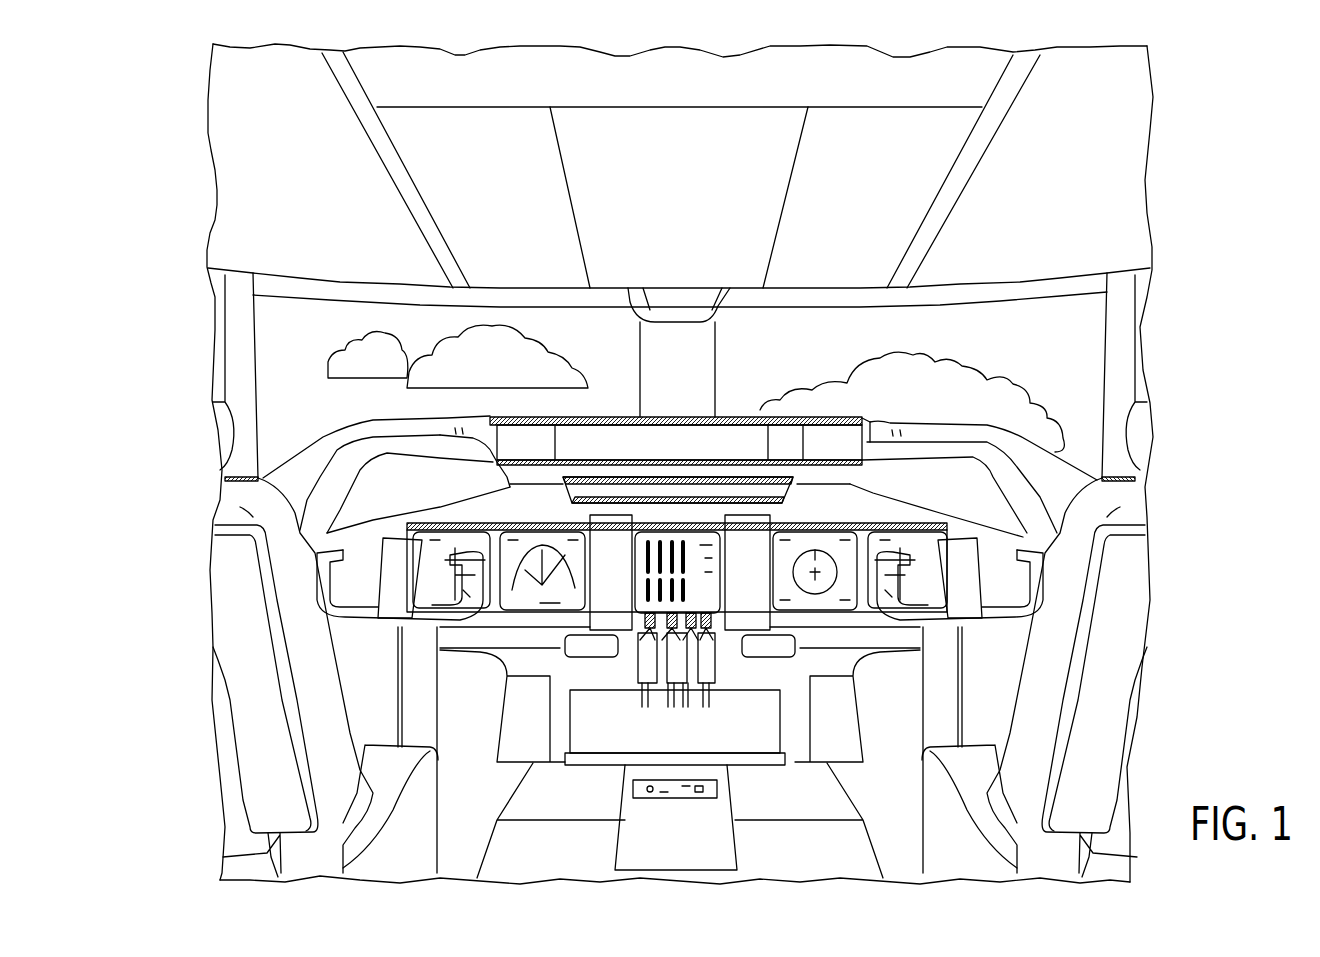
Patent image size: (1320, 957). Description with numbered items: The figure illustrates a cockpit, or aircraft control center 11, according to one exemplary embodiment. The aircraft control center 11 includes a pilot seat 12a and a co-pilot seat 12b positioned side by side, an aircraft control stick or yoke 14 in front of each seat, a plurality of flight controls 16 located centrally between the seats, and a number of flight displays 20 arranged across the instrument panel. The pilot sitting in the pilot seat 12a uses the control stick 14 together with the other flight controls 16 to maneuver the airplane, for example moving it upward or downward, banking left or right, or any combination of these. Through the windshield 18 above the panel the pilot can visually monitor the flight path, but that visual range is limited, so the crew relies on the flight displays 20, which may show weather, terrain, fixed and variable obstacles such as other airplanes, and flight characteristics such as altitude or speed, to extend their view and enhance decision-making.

The aircraft control center 11 is at (1200, 170).
The pilot seat 12a is at (220, 573).
The co-pilot seat 12b is at (1133, 595).
The aircraft control stick or yoke 14 is at (447, 617).
The flight controls 16 is at (712, 644).
The windshield 18 is at (272, 343).
The flight displays 20 is at (442, 533).